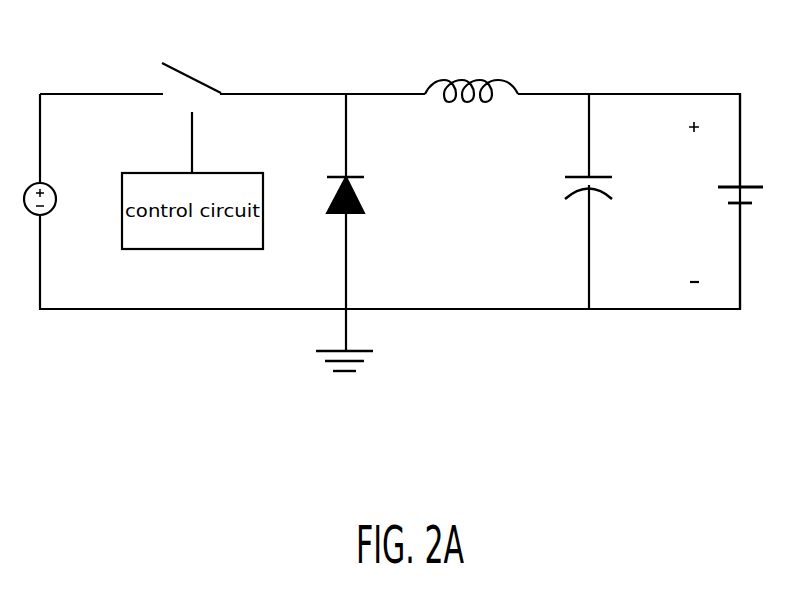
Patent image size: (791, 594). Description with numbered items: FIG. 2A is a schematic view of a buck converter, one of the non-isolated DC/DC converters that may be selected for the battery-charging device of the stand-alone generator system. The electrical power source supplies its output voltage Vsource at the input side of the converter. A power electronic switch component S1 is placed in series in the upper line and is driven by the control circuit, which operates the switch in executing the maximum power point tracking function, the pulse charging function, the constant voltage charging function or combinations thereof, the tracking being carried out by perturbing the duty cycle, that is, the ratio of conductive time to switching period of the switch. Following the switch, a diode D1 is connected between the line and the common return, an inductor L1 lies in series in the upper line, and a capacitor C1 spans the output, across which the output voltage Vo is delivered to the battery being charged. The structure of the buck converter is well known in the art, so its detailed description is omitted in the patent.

The switch S1 is at (191, 99).
The inductor L1 is at (471, 70).
The diode D1 is at (371, 197).
The capacitor C1 is at (567, 190).
The output voltage / load Vo is at (719, 201).
The output voltage of the electrical power source Vsource is at (69, 213).